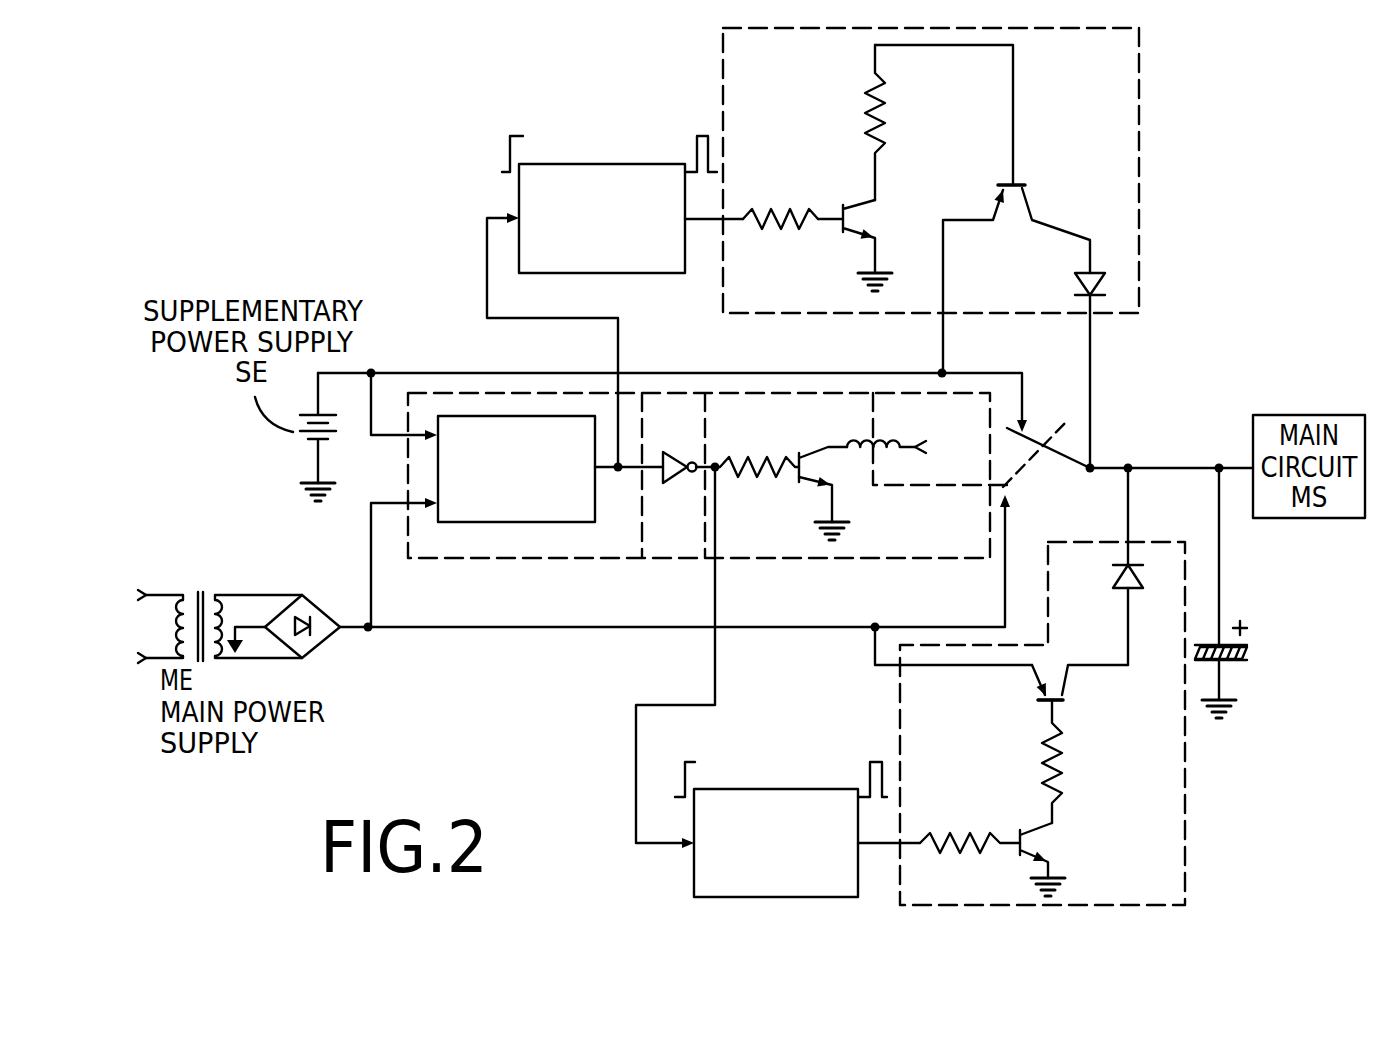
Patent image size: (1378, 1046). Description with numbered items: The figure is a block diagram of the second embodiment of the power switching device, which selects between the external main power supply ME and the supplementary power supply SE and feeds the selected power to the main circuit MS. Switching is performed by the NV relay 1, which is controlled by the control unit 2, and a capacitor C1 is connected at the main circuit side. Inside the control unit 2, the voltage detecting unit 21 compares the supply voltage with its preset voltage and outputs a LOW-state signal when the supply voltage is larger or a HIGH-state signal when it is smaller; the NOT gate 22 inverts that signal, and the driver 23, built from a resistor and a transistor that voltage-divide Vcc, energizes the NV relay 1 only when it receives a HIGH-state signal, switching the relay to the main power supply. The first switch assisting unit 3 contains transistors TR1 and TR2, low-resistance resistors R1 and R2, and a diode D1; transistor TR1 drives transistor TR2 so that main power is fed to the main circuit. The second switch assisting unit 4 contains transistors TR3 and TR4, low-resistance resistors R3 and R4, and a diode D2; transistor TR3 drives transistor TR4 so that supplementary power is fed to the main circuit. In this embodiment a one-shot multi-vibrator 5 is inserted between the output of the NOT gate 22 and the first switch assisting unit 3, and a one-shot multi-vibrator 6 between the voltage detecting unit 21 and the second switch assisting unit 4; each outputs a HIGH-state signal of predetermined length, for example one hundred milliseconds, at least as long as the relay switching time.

The NV relay 1 is at (1043, 418).
The control unit 2 is at (709, 466).
The first switch assisting unit 3 is at (1060, 686).
The second switch assisting unit 4 is at (964, 248).
The one-shot multi-vibrator 5 is at (765, 798).
The one-shot multi-vibrator 6 is at (588, 170).
The voltage detecting unit 21 is at (488, 422).
The NOT gate 22 is at (672, 452).
The driver 23 is at (772, 425).
The low-resistance resistor R1 is at (970, 822).
The low-resistance resistor R2 is at (1070, 761).
The low-resistance resistor R3 is at (780, 201).
The low-resistance resistor R4 is at (897, 122).
The transistor TR1 is at (1064, 859).
The transistor TR2 is at (1080, 690).
The transistor TR3 is at (875, 245).
The transistor TR4 is at (1016, 264).
The diode D1 is at (1147, 566).
The diode D2 is at (1072, 366).
The capacitor C1 is at (1240, 593).